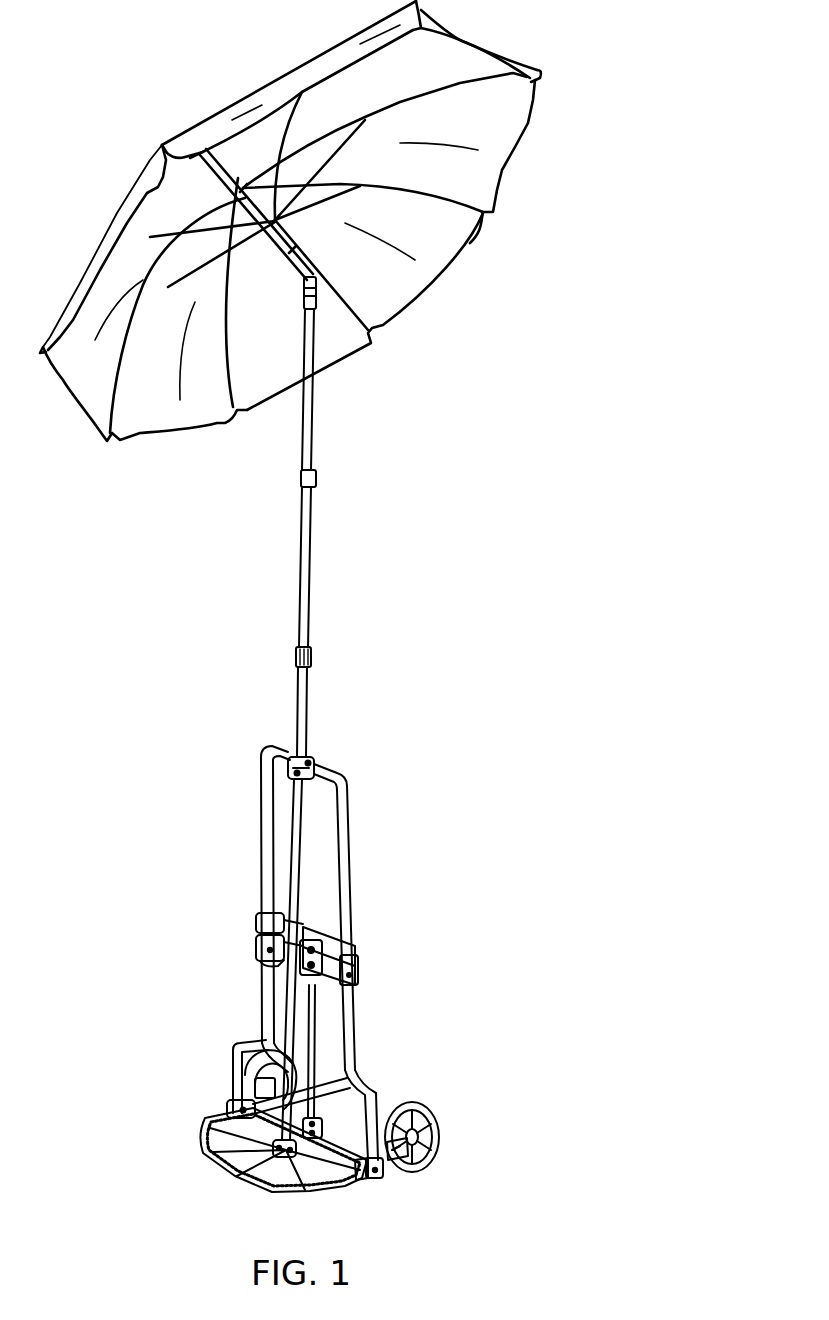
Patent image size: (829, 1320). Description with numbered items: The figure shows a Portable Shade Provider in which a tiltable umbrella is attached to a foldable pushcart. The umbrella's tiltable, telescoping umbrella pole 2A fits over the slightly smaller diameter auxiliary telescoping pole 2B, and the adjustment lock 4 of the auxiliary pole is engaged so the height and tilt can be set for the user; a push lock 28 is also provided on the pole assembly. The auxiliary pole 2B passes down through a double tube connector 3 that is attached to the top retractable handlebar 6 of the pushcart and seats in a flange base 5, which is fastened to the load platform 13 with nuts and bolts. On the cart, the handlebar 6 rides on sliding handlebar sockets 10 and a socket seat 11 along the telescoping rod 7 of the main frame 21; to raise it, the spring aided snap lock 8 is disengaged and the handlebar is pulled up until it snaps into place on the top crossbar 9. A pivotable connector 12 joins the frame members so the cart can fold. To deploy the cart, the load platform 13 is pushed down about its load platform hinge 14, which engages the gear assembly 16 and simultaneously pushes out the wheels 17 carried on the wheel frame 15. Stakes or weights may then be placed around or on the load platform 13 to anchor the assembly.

The push lock 28 is at (317, 475).
The umbrella telescoping pole 2A is at (318, 535).
The adjustment lock 4 is at (313, 650).
The auxiliary telescoping pole 2B is at (312, 705).
The double tube connector 3 is at (306, 764).
The retractable handlebar 6 is at (340, 776).
The snap lock 8 is at (318, 930).
The sliding handlebar sockets 10 is at (256, 925).
The socket seat 11 is at (260, 946).
The crossbar 9 is at (273, 960).
The telescoping rod 7 is at (294, 1003).
The main frame 21 is at (352, 1014).
The pivotable connector 12 is at (322, 1130).
The wheel 17 is at (437, 1127).
The wheel frame 15 is at (407, 1157).
The load platform hinge 14 is at (378, 1178).
The gear assembly 16 is at (360, 1172).
The load platform 13 is at (235, 1176).
The flange base 5 is at (203, 1162).